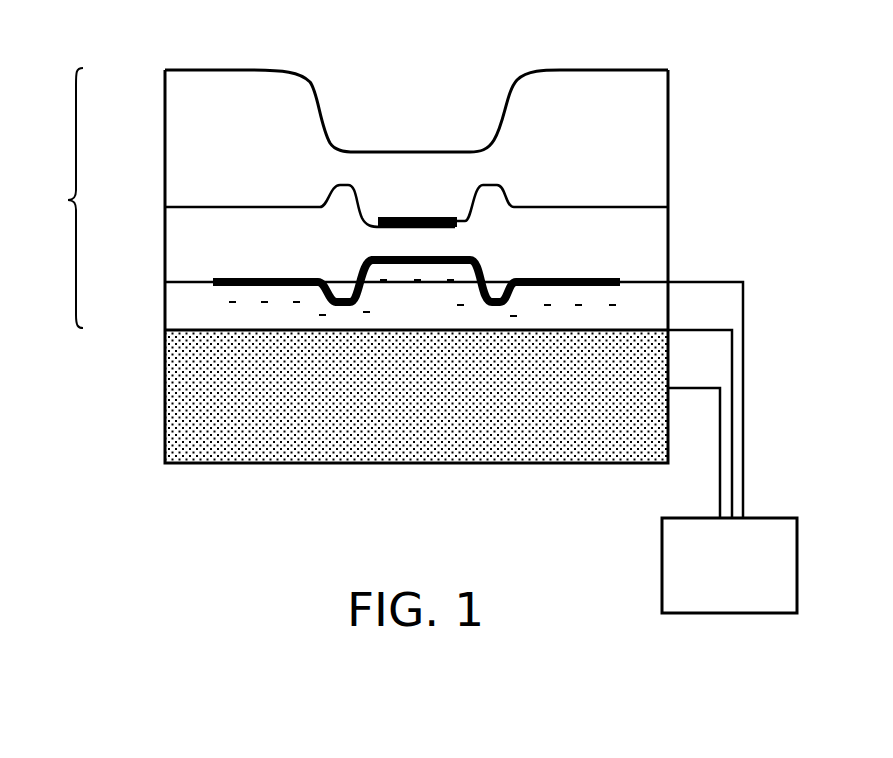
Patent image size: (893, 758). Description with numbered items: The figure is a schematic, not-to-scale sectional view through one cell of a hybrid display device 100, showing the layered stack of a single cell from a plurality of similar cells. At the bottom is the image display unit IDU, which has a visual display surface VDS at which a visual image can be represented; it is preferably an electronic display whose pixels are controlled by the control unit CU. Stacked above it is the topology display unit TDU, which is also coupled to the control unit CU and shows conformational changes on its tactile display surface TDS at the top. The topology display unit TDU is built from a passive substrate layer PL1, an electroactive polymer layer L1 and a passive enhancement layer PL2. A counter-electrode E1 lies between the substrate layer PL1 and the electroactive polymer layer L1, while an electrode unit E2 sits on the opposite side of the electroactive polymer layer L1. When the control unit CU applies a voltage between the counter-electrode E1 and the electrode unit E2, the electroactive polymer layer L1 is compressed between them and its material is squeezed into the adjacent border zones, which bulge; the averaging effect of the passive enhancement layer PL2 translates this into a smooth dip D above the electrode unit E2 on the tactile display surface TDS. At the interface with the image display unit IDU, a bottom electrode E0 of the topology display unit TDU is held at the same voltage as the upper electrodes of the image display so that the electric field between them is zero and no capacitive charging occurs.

The tactile display surface TDS is at (222, 62).
The dip D is at (435, 131).
The topology display unit TDU is at (47, 198).
The passive enhancement layer PL2 is at (183, 142).
The electroactive polymer layer L1 is at (183, 252).
The substrate layer PL1 is at (183, 307).
The image display unit IDU is at (183, 398).
The electrode unit E2 is at (450, 230).
The counter-electrode E1 is at (556, 278).
The bottom electrode E0 is at (618, 328).
The visual display surface VDS is at (305, 340).
The display device 100 is at (496, 537).
The control unit CU is at (747, 577).